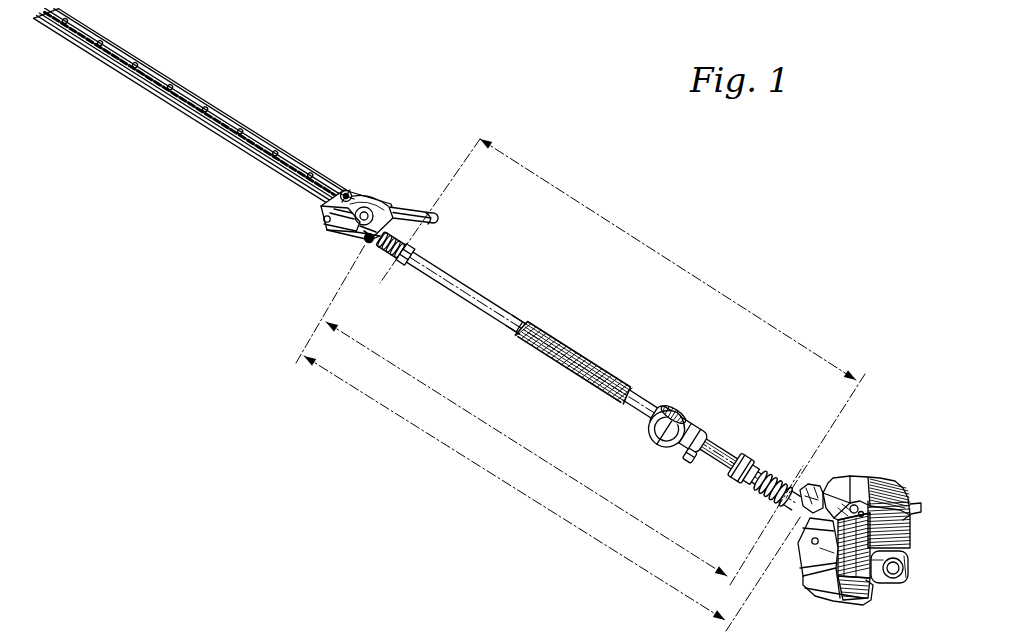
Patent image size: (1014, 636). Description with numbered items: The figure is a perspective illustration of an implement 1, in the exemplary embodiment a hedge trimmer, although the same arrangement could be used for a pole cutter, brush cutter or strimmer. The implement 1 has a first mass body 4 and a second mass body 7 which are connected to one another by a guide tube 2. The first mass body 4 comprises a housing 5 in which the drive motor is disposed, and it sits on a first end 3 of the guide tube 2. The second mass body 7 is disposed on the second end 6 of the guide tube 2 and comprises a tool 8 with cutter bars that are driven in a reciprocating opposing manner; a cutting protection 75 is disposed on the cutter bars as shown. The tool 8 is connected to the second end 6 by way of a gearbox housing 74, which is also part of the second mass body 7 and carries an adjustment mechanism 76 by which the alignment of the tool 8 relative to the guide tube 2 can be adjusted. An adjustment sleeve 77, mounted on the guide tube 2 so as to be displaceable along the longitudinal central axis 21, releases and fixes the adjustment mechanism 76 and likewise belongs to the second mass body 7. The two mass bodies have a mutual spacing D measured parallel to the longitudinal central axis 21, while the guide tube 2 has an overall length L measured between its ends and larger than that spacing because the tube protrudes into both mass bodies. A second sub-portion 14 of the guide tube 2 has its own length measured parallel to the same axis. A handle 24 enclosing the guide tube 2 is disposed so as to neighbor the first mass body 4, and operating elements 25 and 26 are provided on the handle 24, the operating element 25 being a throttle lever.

The implement 1 is at (406, 170).
The guide tube 2 is at (470, 290).
The first end 3 is at (802, 480).
The first mass body 4 is at (856, 458).
The housing 5 is at (796, 568).
The second end 6 is at (360, 234).
The second mass body 7 is at (306, 222).
The tool 8 is at (242, 142).
The second sub-portion 14 is at (628, 387).
The longitudinal central axis 21 is at (500, 318).
The handle 24 is at (700, 456).
The operating element 25 is at (674, 451).
The operating element 26 is at (707, 433).
The gearbox housing 74 is at (358, 186).
The cutting protection 75 is at (152, 95).
The adjustment mechanism 76 is at (331, 179).
The adjustment sleeve 77 is at (376, 240).